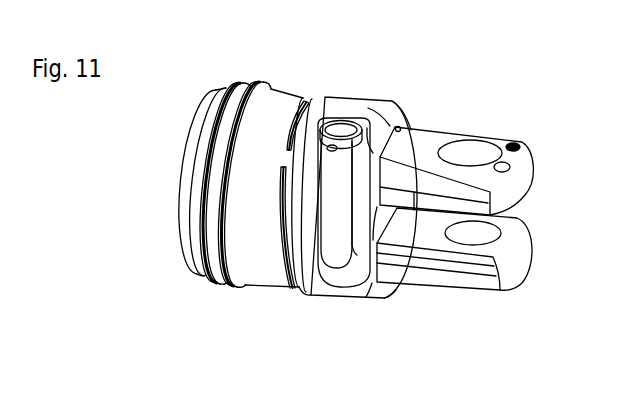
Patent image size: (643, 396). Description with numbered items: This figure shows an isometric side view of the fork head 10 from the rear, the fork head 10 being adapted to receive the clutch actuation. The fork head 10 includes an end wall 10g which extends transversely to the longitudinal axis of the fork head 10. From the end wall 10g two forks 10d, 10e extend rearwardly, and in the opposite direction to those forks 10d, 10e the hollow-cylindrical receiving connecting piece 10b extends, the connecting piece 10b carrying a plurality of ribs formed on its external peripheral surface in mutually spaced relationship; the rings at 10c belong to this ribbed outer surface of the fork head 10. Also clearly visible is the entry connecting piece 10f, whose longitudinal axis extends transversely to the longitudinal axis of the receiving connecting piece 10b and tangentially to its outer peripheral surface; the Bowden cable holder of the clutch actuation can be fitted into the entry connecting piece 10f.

The fork head 10 is at (358, 197).
The receiving connecting piece 10b is at (248, 245).
The rings 10c is at (205, 247).
The fork 10d is at (512, 158).
The fork 10e is at (510, 270).
The entry connecting piece 10f is at (338, 170).
The end wall 10g is at (370, 225).